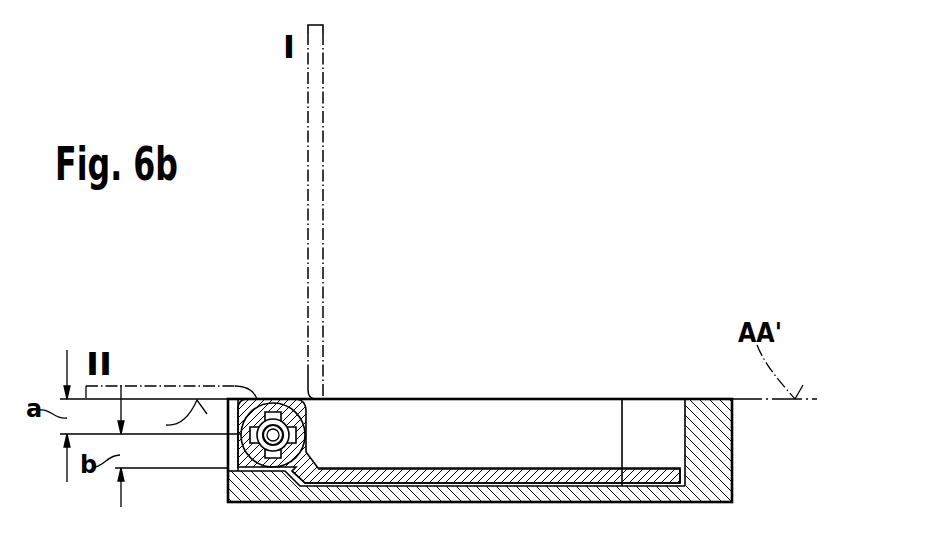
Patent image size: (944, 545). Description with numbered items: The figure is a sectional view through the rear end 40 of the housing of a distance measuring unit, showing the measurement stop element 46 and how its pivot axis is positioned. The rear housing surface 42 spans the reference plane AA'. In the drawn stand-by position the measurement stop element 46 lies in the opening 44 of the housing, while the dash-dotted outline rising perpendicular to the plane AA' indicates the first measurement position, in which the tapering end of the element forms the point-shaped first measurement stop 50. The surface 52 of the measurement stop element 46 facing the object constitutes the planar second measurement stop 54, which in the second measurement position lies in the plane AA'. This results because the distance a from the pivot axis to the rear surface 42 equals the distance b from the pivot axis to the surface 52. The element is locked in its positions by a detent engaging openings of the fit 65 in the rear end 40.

The rear end of the housing 40 is at (712, 465).
The rear housing surface 42 is at (708, 384).
The opening 44 is at (412, 437).
The measurement stop element 46 is at (329, 133).
The first measurement stop 50 is at (323, 25).
The surface of the measurement stop element facing the object 52 is at (478, 470).
The second measurement stop 54 is at (160, 420).
The fit 65 is at (256, 399).